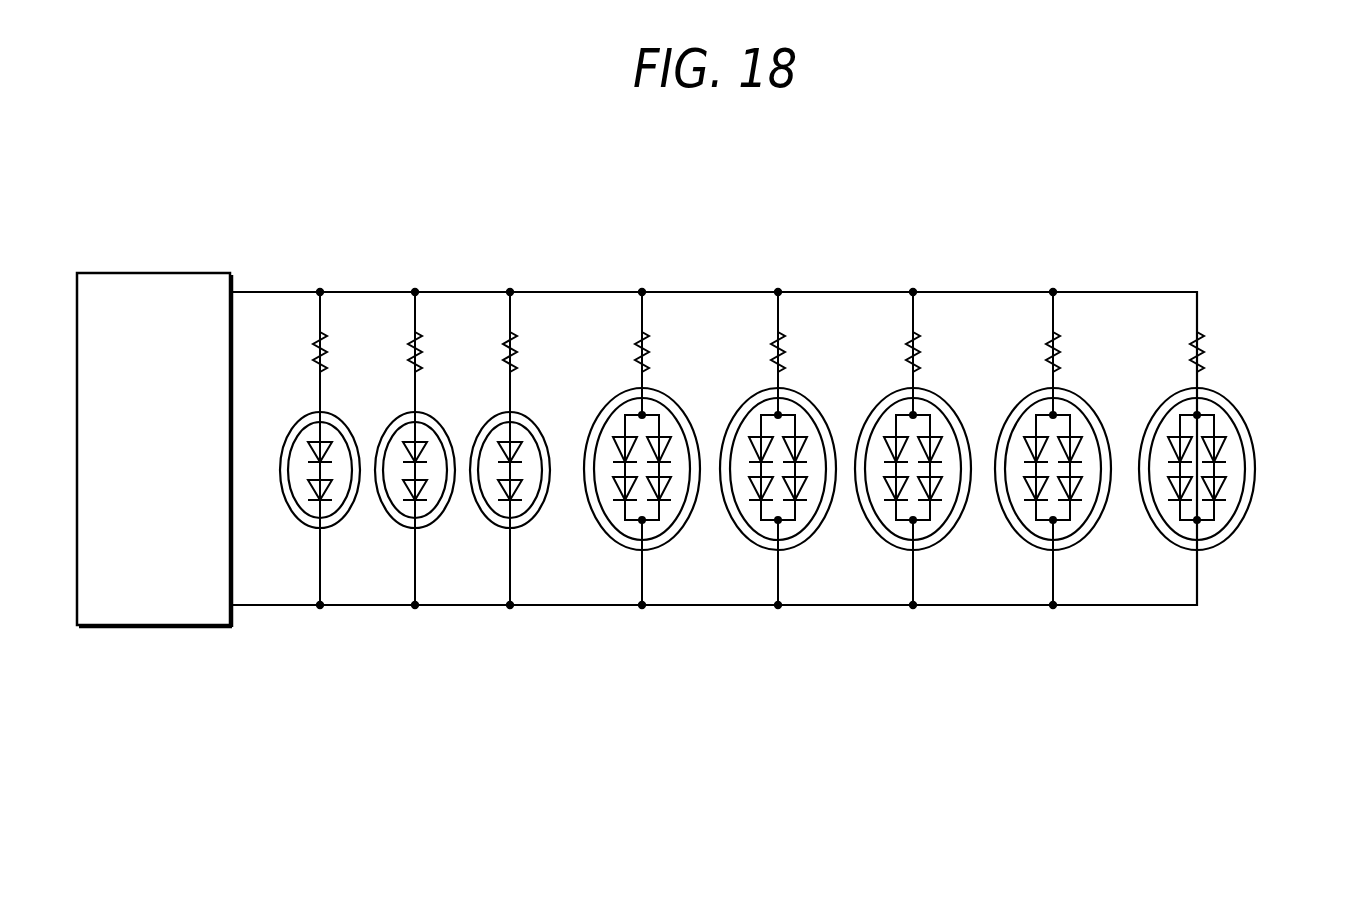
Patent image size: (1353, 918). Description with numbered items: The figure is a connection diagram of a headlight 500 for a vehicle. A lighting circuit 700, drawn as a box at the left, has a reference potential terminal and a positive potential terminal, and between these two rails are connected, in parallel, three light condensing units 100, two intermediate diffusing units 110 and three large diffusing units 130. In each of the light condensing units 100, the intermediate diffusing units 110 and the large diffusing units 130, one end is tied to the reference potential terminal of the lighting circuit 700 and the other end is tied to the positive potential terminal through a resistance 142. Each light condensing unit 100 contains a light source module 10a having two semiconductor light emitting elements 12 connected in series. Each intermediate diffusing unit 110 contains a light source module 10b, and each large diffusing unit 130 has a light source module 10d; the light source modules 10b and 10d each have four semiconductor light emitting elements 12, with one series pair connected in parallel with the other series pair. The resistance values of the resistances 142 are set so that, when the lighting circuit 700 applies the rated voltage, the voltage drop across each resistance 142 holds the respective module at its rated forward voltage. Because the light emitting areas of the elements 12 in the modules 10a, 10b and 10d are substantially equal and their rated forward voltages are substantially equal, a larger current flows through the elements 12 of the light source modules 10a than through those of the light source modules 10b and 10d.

The headlight 500 is at (268, 162).
The lighting circuit 700 is at (167, 272).
The resistance 142 is at (312, 346).
The light condensing unit 100 is at (294, 424).
The intermediate diffusing unit 110 is at (600, 408).
The large diffusing unit 130 is at (955, 400).
The semiconductor light emitting element 12 is at (312, 454).
The light source module 10a is at (294, 518).
The light source module 10b is at (600, 530).
The light source module 10d is at (948, 530).